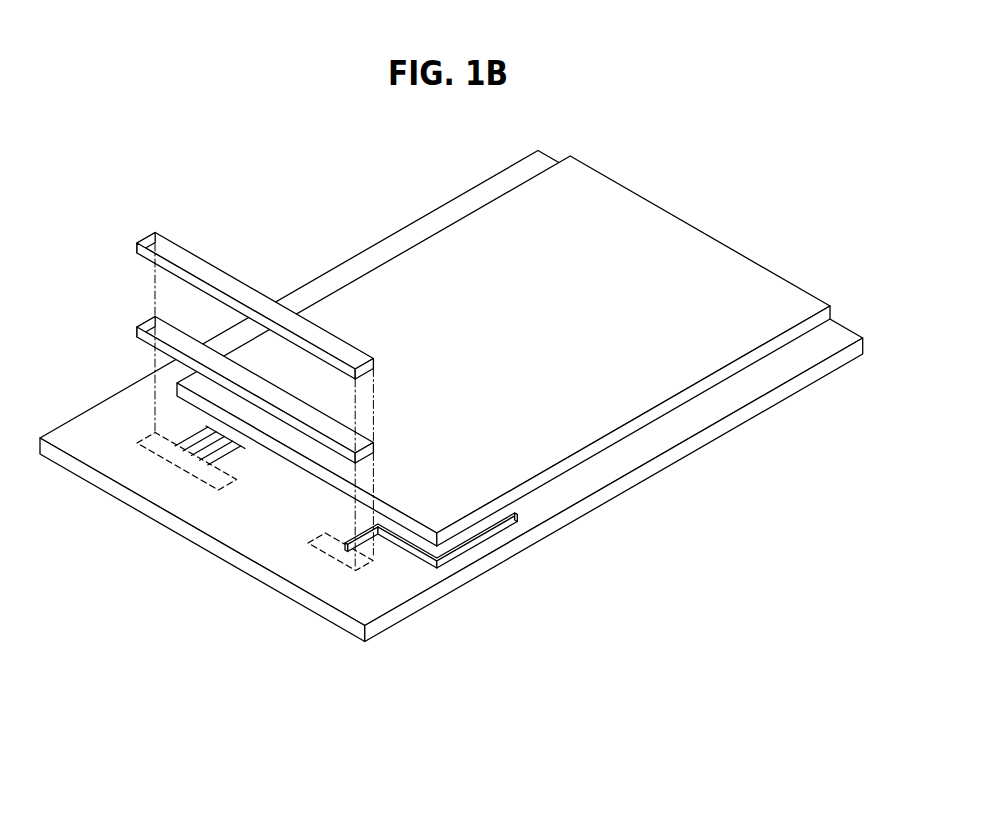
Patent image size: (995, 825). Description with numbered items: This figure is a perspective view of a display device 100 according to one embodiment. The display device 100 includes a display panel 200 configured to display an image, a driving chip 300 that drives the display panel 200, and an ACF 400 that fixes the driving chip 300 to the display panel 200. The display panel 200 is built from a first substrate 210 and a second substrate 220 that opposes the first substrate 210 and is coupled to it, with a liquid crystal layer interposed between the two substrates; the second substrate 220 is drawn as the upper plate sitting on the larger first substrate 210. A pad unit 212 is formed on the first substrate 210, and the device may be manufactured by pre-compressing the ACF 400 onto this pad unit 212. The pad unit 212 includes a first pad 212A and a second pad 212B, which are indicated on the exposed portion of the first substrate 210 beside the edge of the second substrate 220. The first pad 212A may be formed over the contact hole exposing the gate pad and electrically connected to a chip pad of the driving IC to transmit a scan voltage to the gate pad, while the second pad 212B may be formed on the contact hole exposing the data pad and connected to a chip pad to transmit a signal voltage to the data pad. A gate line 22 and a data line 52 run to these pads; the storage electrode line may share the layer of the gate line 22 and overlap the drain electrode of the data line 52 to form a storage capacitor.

The display device 100 is at (451, 432).
The display panel 200 is at (451, 396).
The first substrate 210 is at (618, 458).
The second substrate 220 is at (618, 403).
The pad unit 212 is at (255, 579).
The first pad 212A is at (340, 607).
The second pad 212B is at (180, 467).
The gate line 22 is at (484, 545).
The data line 52 is at (192, 430).
The driving chip 300 is at (153, 243).
The ACF 400 is at (153, 327).